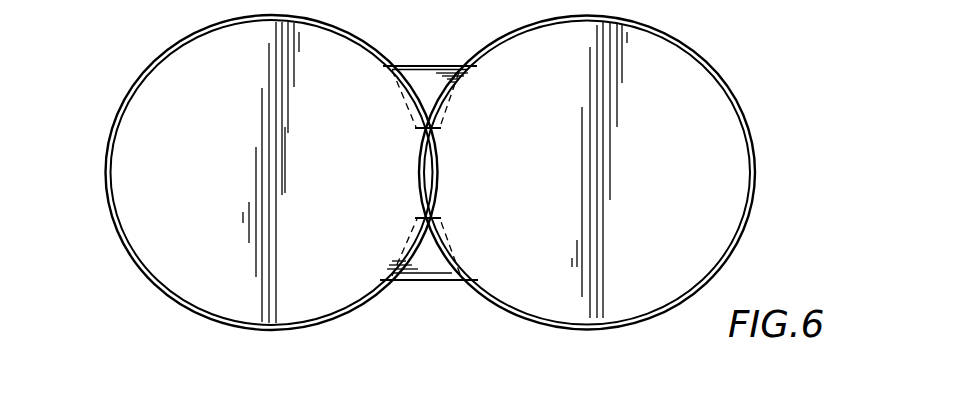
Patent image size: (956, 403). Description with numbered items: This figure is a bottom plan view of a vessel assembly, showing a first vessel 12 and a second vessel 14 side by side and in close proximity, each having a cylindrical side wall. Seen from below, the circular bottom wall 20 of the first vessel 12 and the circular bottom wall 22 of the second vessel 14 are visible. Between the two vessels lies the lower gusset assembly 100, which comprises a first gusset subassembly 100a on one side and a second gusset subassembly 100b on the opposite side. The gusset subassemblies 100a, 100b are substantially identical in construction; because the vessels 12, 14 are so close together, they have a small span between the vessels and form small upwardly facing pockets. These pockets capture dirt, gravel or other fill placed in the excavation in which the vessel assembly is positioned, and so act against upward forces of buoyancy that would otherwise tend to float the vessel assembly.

The first vessel 12 is at (117, 75).
The second vessel 14 is at (731, 49).
The bottom wall 20 is at (214, 174).
The bottom wall 22 is at (665, 174).
The lower gusset assembly 100 is at (426, 138).
The first gusset subassembly 100a is at (445, 54).
The second gusset subassembly 100b is at (420, 296).